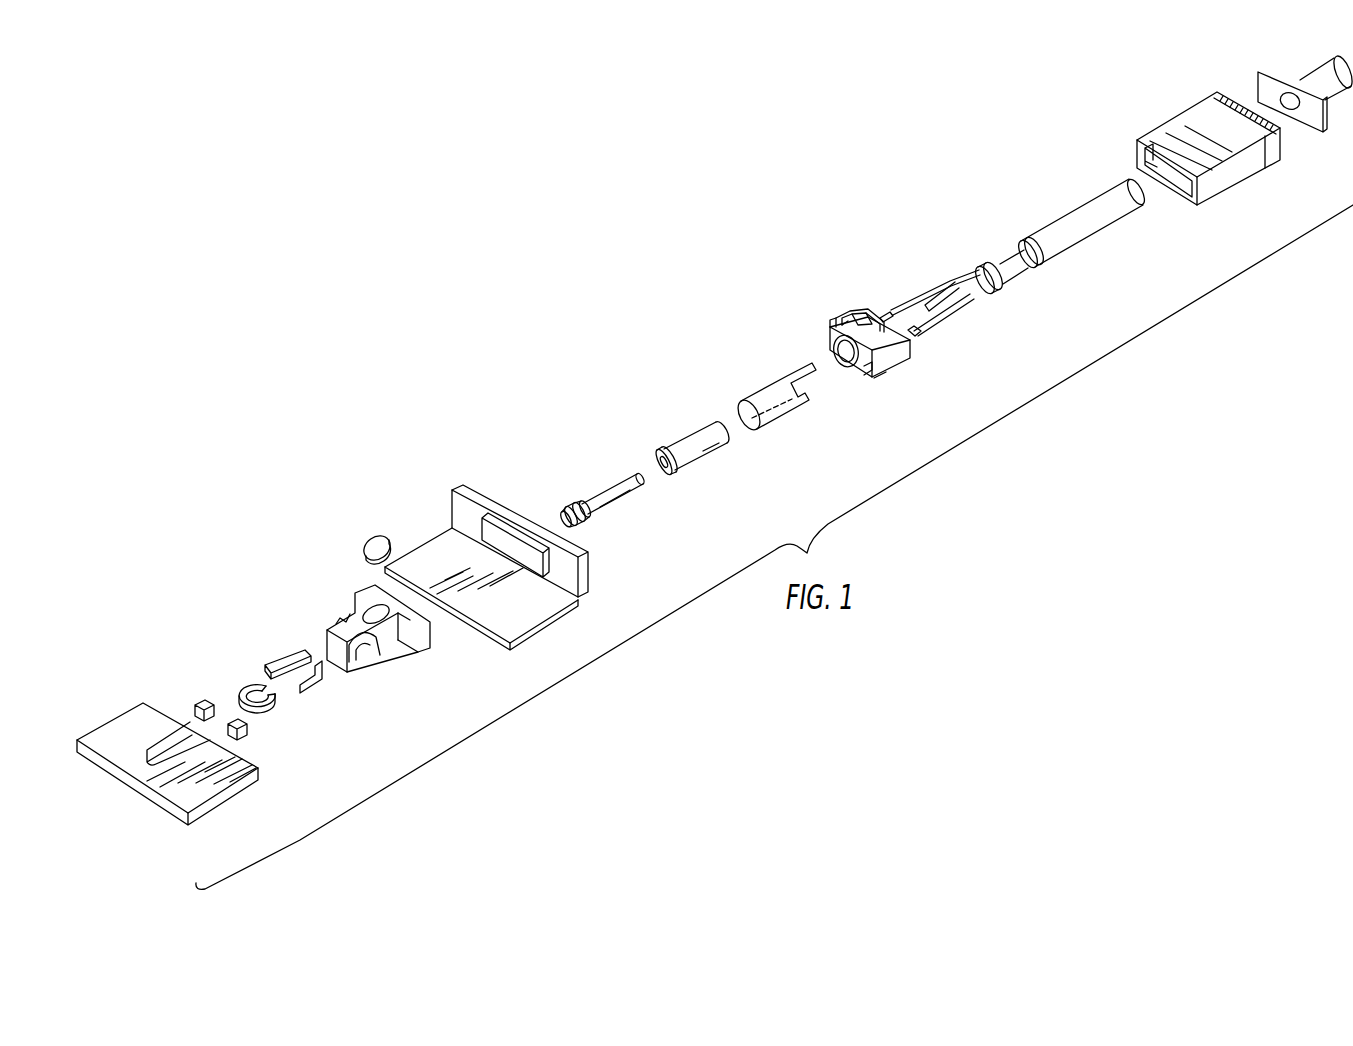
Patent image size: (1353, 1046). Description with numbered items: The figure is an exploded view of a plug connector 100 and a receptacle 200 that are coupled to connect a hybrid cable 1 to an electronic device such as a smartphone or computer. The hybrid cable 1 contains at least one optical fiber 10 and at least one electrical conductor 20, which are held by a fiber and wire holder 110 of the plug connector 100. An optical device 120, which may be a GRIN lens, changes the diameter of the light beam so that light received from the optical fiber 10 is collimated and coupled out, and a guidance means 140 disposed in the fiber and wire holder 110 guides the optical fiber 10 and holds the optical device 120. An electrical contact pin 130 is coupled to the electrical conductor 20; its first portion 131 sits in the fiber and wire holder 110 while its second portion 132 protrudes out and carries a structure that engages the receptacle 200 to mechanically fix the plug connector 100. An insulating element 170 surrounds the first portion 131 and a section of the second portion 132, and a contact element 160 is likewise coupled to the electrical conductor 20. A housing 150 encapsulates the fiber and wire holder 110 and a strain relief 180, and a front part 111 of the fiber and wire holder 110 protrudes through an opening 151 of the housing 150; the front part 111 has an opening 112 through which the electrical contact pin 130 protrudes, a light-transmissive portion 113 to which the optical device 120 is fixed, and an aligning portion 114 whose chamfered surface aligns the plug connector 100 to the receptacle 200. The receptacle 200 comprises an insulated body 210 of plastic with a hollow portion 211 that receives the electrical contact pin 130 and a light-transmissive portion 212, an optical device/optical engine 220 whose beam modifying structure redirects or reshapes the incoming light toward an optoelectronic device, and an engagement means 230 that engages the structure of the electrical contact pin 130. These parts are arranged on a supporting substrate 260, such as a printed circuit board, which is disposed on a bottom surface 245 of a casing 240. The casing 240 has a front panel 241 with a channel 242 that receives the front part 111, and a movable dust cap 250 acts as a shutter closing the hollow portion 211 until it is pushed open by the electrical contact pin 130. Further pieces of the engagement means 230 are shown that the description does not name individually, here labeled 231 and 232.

The hybrid cable 1 is at (1062, 242).
The optical fiber 10 is at (942, 325).
The electrical conductor 20 is at (960, 273).
The plug connector 100 is at (837, 208).
The fiber and wire holder 110 is at (902, 365).
The front part 111 is at (830, 330).
The opening 112 is at (838, 364).
The light-transmissive portion 113 is at (867, 367).
The aligning portion 114 is at (877, 373).
The optical device 120 is at (882, 312).
The electrical contact pin 130 is at (611, 512).
The first portion 131 is at (610, 487).
The second portion 132 is at (563, 508).
The guidance means 140 is at (862, 316).
The housing 150 is at (1224, 175).
The opening 151 is at (1145, 162).
The contact element 160 is at (757, 393).
The insulating element 170 is at (697, 457).
The strain relief 180 is at (1305, 77).
The receptacle 200 is at (253, 518).
The insulated body 210 is at (367, 665).
The hollow portion 211 is at (337, 632).
The light-transmissive portion 212 is at (437, 658).
The optical device/optical engine 220 is at (190, 706).
The engagement means 230 is at (298, 703).
The ring 231 is at (240, 688).
The bar 232 is at (280, 650).
The casing 240 is at (548, 622).
The front panel 241 is at (583, 578).
The channel 242 is at (505, 527).
The bottom surface 245 is at (503, 623).
The movable dust cap 250 is at (373, 537).
The supporting substrate 260 is at (193, 787).